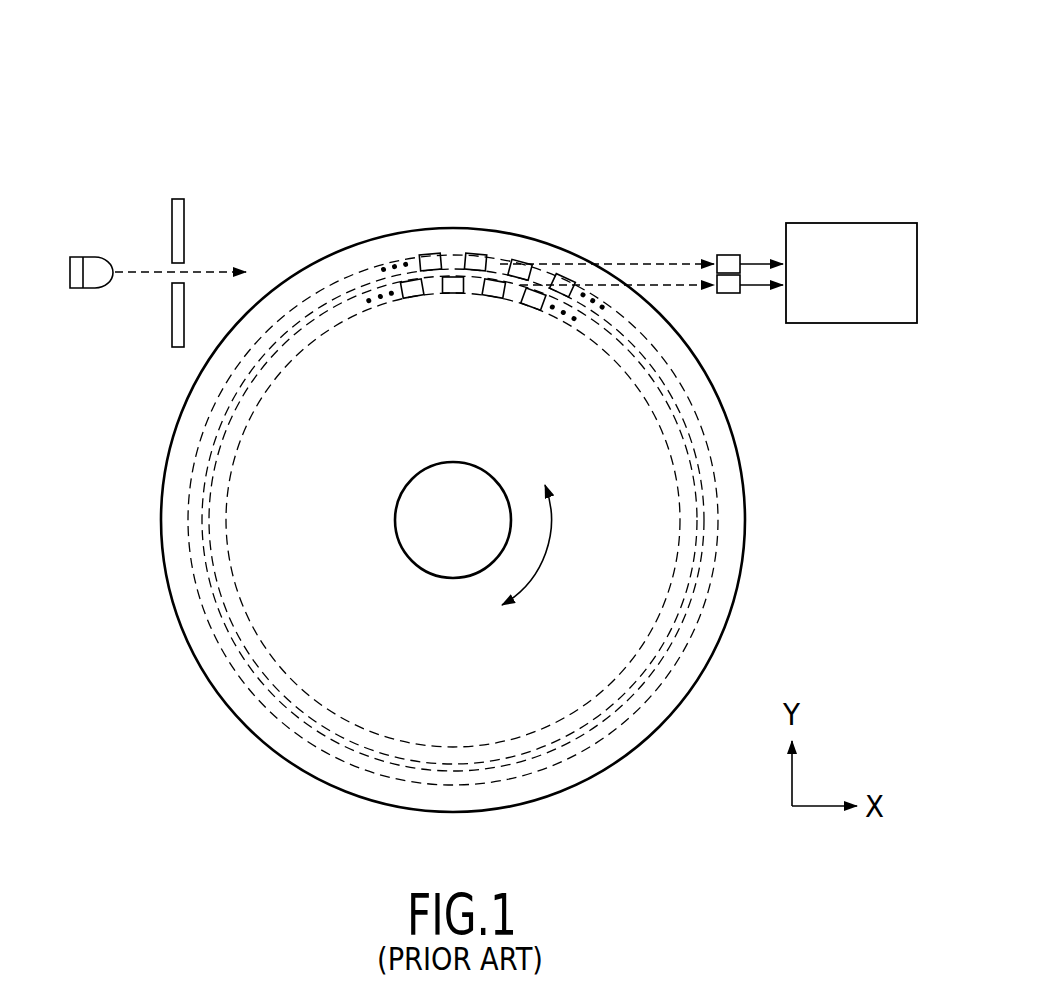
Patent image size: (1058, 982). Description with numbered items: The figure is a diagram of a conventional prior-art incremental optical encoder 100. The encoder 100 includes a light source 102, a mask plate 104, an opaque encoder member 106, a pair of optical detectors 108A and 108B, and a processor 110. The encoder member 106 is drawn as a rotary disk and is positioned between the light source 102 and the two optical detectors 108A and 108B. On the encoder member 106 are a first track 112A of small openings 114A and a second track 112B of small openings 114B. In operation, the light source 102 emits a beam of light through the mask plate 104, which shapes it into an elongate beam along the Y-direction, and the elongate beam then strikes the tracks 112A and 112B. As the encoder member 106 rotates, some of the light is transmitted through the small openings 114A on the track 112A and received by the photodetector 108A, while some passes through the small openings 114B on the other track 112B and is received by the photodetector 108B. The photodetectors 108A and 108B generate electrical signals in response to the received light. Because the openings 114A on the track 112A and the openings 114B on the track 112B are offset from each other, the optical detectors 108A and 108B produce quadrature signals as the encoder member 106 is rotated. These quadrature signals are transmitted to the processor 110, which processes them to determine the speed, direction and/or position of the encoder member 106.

The incremental optical encoder 100 is at (781, 51).
The light source 102 is at (86, 255).
The mask plate 104 is at (176, 198).
The opaque encoder member 106 is at (751, 575).
The optical detector 108A is at (733, 254).
The optical detector 108B is at (733, 294).
The processor 110 is at (870, 222).
The first track 112A is at (708, 467).
The second track 112B is at (652, 398).
The small openings 114A is at (431, 253).
The small openings 114B is at (413, 294).